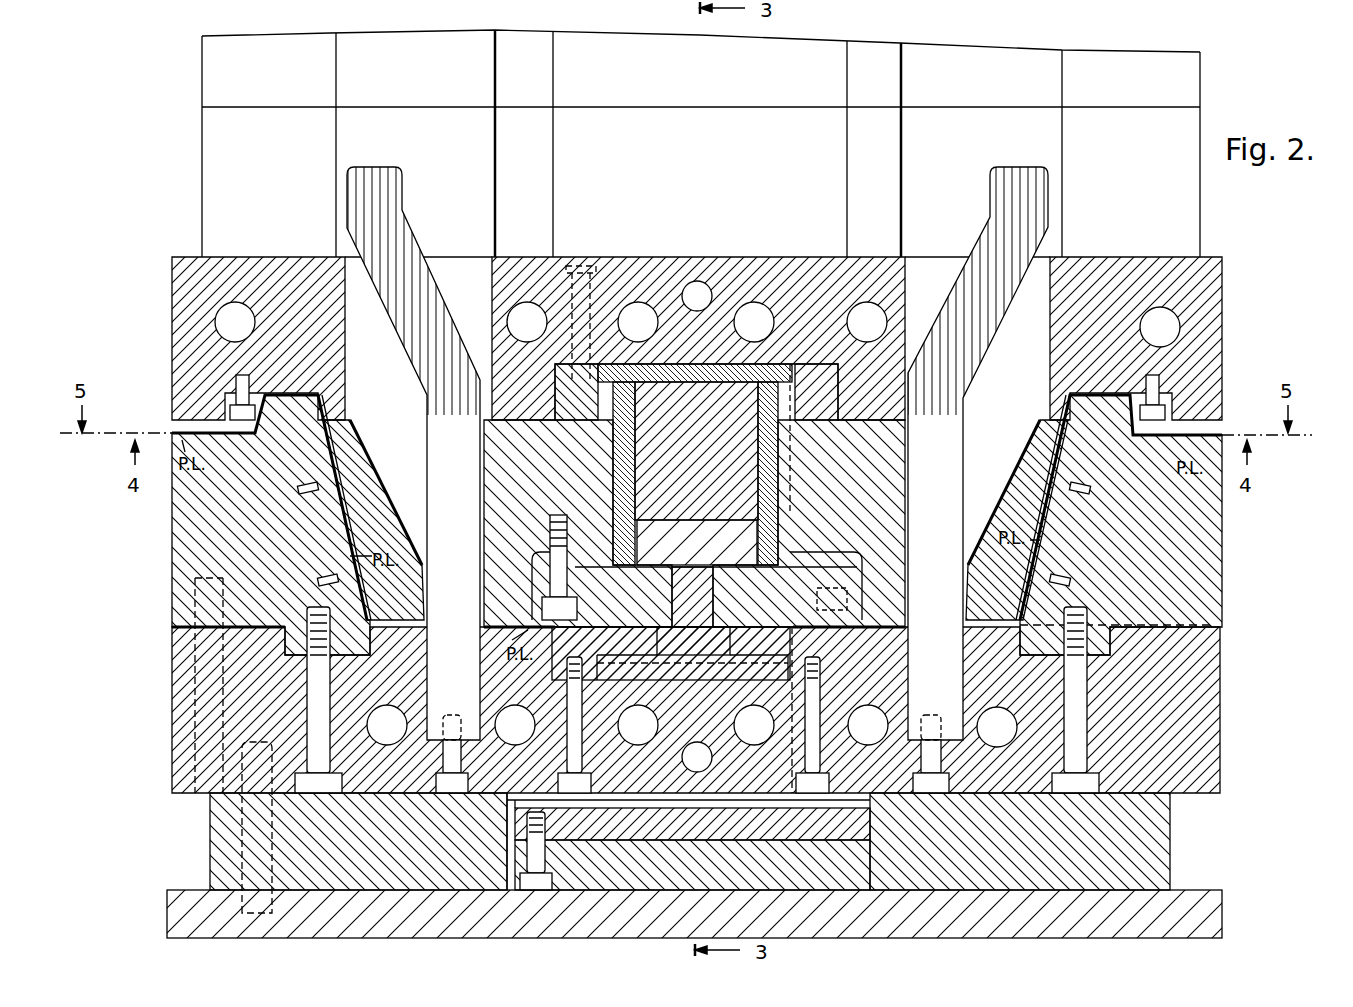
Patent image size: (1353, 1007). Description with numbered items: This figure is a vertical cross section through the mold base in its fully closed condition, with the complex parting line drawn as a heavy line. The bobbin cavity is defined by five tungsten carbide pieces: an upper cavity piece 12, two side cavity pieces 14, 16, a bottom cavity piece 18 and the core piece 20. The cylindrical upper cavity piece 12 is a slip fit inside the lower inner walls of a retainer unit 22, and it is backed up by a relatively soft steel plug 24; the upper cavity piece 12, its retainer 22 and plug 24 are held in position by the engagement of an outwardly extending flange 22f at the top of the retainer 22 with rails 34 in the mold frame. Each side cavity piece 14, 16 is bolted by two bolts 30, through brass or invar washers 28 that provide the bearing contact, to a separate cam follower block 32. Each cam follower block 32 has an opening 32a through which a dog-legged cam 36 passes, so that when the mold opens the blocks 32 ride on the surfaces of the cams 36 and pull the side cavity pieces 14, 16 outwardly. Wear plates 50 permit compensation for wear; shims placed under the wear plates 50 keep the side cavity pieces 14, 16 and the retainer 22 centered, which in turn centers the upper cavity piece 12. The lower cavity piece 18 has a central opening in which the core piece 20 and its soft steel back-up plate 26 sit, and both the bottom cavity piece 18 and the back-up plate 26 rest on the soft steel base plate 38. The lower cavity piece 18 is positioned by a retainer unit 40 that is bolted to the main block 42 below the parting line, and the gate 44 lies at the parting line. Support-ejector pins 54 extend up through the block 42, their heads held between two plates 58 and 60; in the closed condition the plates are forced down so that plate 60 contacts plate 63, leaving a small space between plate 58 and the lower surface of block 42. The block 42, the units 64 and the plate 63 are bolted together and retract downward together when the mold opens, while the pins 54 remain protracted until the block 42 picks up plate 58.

The upper cavity piece 12 is at (697, 522).
The side cavity piece 14 is at (580, 548).
The side cavity piece 16 is at (818, 512).
The bottom cavity piece 18 is at (733, 660).
The core piece 20 is at (708, 602).
The retainer unit 22 is at (800, 524).
The outwardly extending flange 22f is at (793, 380).
The soft steel plug 24 is at (712, 438).
The back-up plate 26 is at (670, 662).
The washer 28 is at (540, 580).
The bolt 30 is at (548, 522).
The cam follower block 32 is at (383, 522).
The opening 32a is at (396, 436).
The rail 34 is at (800, 407).
The dog-legged cam 36 is at (468, 466).
The base plate 38 is at (671, 678).
The retainer unit 40 is at (838, 670).
The main block 42 is at (172, 708).
The gate 44 is at (730, 630).
The wear plate 50 is at (336, 539).
The support-ejector pin 54 is at (793, 805).
The plate 58 is at (698, 836).
The plate 60 is at (698, 876).
The plate 63 is at (1222, 915).
The unit 64 is at (210, 838).